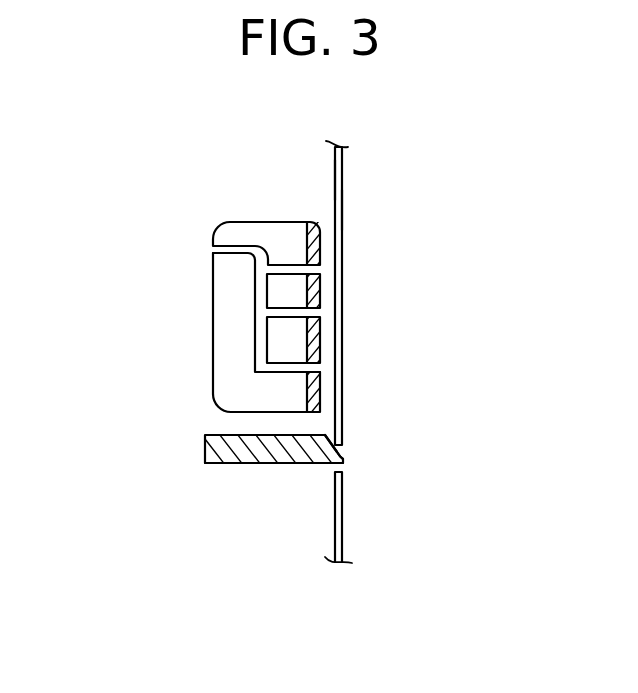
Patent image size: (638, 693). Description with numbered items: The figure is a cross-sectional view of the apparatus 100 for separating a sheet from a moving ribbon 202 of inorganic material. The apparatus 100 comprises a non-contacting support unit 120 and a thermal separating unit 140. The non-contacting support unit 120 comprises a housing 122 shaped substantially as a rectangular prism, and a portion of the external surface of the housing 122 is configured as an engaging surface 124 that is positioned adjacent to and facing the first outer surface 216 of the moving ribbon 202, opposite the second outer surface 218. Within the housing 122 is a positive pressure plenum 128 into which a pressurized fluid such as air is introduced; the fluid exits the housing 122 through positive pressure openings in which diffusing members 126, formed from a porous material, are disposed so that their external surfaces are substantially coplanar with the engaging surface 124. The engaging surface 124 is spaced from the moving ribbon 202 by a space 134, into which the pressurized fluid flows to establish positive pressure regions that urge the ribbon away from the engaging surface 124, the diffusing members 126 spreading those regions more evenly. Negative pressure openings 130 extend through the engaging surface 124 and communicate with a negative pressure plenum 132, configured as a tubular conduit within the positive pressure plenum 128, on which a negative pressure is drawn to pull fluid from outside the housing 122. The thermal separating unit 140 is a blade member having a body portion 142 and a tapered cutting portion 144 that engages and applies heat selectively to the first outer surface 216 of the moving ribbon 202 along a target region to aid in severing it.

The apparatus 100 is at (207, 208).
The non-contacting support unit 120 is at (212, 318).
The housing 122 is at (212, 383).
The engaging surface 124 is at (312, 340).
The diffusing member 126 is at (312, 292).
The positive pressure plenum 128 is at (230, 352).
The negative pressure opening 130 is at (313, 270).
The negative pressure plenum 132 is at (258, 285).
The space 134 is at (323, 387).
The thermal separating unit 140 is at (205, 457).
The body portion 142 is at (267, 463).
The tapered cutting portion 144 is at (348, 437).
The moving ribbon 202 is at (342, 182).
The first outer surface 216 is at (335, 180).
The second outer surface 218 is at (343, 210).